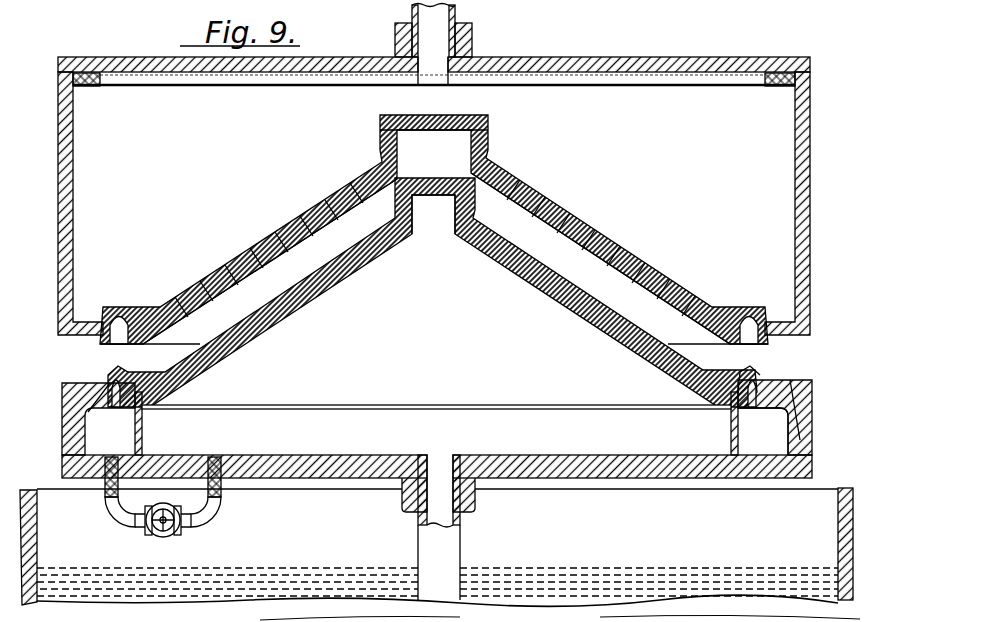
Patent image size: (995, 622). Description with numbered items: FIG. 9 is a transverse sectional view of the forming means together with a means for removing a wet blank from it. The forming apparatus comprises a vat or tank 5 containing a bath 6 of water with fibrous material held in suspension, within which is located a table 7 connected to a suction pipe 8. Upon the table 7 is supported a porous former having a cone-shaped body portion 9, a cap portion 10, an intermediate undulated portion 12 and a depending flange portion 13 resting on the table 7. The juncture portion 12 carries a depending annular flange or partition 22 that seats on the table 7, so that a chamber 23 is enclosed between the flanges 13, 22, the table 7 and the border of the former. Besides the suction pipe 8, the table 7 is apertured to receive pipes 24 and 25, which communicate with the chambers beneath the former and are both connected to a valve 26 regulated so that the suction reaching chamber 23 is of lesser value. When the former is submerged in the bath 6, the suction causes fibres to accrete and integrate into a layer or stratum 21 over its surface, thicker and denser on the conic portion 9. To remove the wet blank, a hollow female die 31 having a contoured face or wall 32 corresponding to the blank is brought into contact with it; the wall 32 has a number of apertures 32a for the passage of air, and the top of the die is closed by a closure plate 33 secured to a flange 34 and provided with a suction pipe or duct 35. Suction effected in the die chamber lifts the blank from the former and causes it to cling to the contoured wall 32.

The vat or tank 5 is at (845, 488).
The bath 6 is at (748, 590).
The table 7 is at (628, 468).
The suction pipe 8 is at (443, 538).
The cone-shaped body portion 9 is at (551, 282).
The cap portion 10 is at (441, 202).
The intermediate undulated portion 12 is at (745, 407).
The depending flange portion 13 is at (813, 430).
The layer or stratum 21 is at (563, 231).
The depending annular flange or partition 22 is at (143, 424).
The chamber 23 is at (753, 444).
The pipe 24 is at (214, 457).
The pipe 25 is at (123, 480).
The valve 26 is at (152, 534).
The hollow female die 31 is at (811, 189).
The contoured face or wall 32 is at (572, 213).
The apertures 32a is at (678, 290).
The closure plate 33 is at (657, 57).
The flange 34 is at (785, 88).
The suction pipe or duct 35 is at (435, 18).